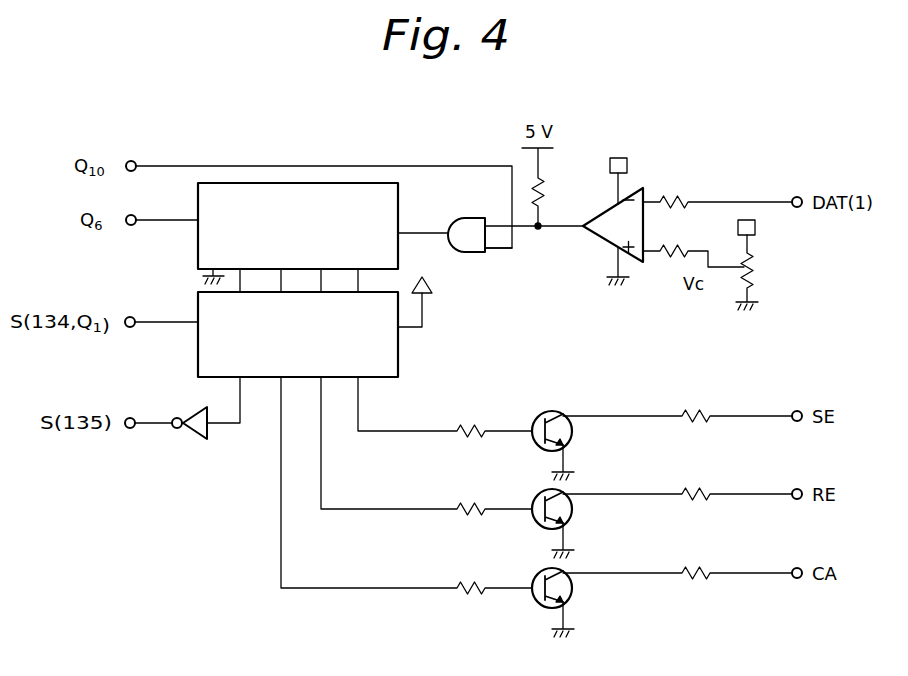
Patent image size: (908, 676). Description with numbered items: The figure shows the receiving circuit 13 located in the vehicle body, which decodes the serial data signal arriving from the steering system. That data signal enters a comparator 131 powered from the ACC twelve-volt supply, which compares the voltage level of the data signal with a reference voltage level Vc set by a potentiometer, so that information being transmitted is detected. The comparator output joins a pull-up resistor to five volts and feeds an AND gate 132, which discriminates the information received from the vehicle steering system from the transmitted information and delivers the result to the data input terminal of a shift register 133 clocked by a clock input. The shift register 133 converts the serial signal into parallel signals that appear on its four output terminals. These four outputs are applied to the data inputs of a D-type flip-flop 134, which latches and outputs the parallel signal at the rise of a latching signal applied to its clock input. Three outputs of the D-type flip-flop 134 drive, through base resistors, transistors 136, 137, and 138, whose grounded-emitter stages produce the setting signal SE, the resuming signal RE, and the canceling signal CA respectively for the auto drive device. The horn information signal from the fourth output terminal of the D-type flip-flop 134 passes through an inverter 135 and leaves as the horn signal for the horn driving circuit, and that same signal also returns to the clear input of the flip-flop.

The receiving circuit 13 is at (264, 146).
The comparator 131 is at (603, 240).
The AND gate 132 is at (477, 252).
The shift register 133 is at (399, 208).
The D-type flip-flop 134 is at (399, 355).
The inverter 135 is at (205, 440).
The transistor 136 is at (560, 412).
The transistor 137 is at (572, 514).
The transistor 138 is at (572, 592).